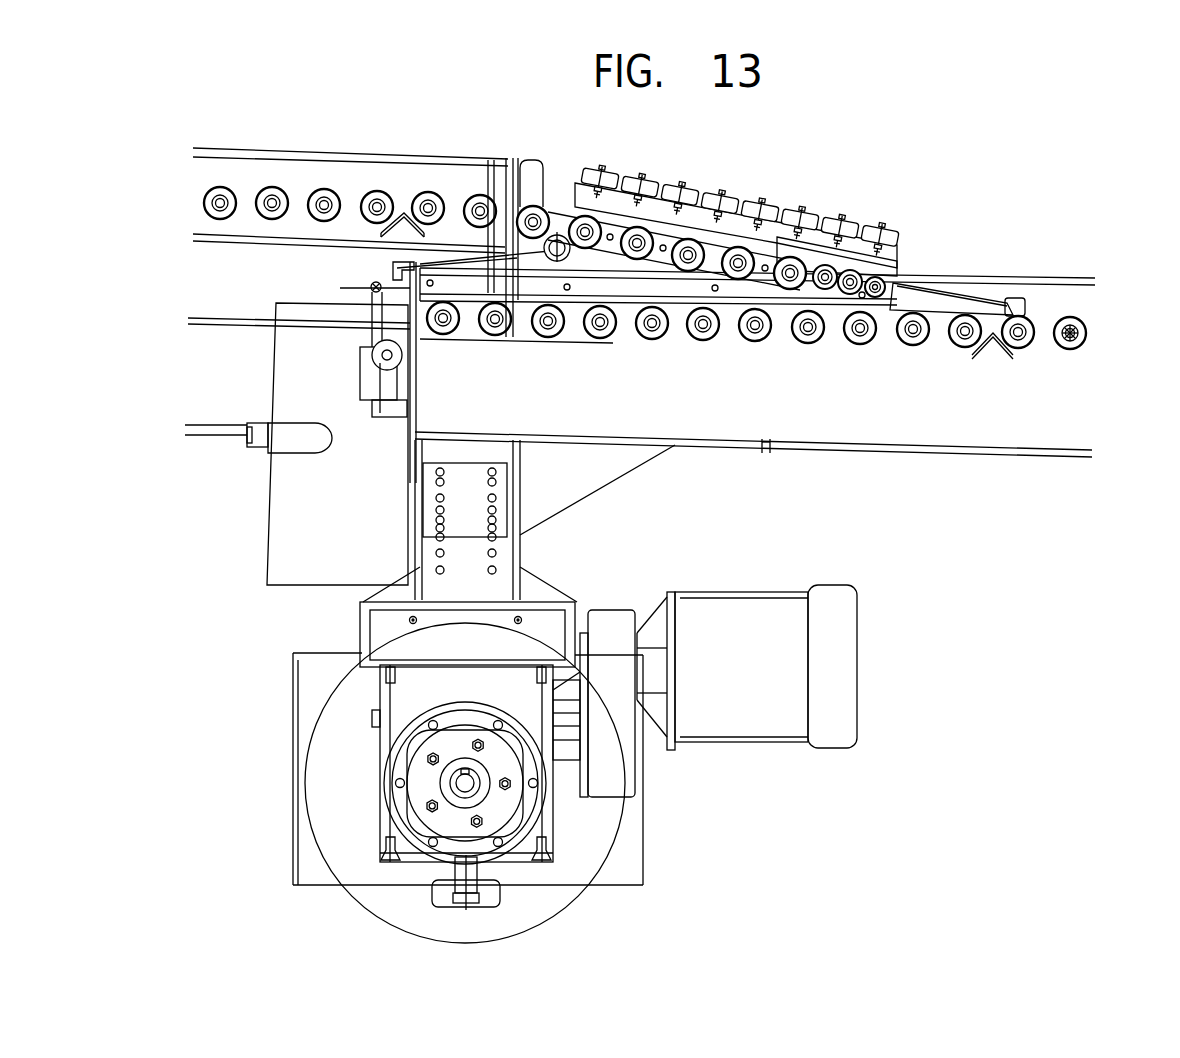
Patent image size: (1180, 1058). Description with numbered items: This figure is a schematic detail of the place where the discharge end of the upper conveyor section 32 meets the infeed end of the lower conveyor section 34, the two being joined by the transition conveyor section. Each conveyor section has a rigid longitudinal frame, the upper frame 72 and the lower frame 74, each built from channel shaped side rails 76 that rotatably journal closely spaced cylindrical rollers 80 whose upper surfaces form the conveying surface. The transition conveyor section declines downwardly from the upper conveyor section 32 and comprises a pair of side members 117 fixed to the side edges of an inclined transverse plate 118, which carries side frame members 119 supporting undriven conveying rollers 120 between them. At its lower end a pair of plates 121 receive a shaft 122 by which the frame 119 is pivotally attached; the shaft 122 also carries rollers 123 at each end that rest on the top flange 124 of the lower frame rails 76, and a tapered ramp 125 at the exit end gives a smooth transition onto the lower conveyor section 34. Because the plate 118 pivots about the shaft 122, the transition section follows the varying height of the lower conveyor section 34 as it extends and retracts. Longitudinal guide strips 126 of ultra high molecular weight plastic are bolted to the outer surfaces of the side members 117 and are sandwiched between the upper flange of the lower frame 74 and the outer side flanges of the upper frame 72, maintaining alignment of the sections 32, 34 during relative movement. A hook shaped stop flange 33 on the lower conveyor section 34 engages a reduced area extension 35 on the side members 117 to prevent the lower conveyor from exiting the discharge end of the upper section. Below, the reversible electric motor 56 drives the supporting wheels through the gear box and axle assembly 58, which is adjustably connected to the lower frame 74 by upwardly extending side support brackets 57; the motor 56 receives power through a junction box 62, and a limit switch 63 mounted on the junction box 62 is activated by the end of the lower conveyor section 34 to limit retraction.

The upper conveyor section 32 is at (281, 149).
The hook shaped stop flange 33 is at (397, 272).
The lower conveyor section 34 is at (1033, 280).
The reduced area extension 35 is at (483, 253).
The reversible electric motor 56 is at (845, 665).
The side support brackets 57 is at (470, 493).
The gear box and axle assembly 58 is at (436, 551).
The junction box 62 is at (290, 505).
The limit switch 63 is at (377, 310).
The frame 72 is at (214, 148).
The frame 74 is at (967, 454).
The side rails 76 is at (1026, 434).
The cylindrical rollers 80 is at (218, 204).
The side members 117 is at (607, 203).
The transverse plate 118 is at (812, 262).
The side frame members 119 is at (727, 247).
The undriven conveying rollers 120 is at (648, 228).
The plates 121 is at (552, 200).
The shaft 122 is at (557, 235).
The rollers 123 is at (532, 249).
The top flange 124 is at (998, 275).
The ramp plate 125 is at (958, 282).
The guide strips 126 is at (733, 293).